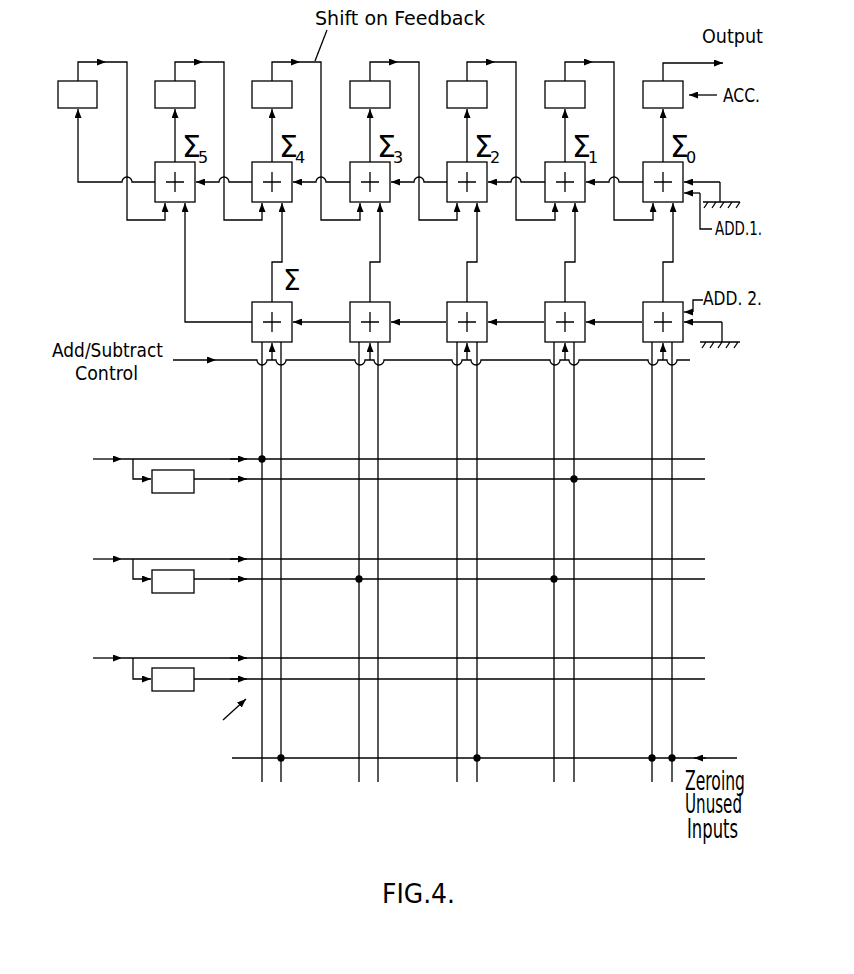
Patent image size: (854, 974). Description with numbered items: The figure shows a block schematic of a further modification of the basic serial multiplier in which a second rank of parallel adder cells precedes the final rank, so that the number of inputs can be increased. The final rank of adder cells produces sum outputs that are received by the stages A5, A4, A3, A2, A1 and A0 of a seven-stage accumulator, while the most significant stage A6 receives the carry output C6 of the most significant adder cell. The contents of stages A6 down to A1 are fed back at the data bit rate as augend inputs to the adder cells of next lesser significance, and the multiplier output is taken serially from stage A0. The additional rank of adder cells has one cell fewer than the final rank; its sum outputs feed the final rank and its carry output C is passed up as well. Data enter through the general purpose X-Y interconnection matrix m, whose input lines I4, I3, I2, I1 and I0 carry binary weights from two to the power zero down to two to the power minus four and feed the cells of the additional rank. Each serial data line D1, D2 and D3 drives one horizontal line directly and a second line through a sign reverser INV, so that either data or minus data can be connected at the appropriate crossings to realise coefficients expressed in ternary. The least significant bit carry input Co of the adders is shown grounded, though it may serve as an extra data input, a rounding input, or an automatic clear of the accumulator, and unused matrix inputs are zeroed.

The most significant accumulator stage A6 is at (77, 94).
The accumulator stage A5 is at (175, 94).
The accumulator stage A4 is at (272, 94).
The accumulator stage A3 is at (370, 94).
The accumulator stage A2 is at (467, 94).
The accumulator stage A1 is at (565, 94).
The least significant accumulator stage A0 is at (663, 94).
The input line I4 is at (259, 562).
The input line I3 is at (357, 562).
The input line I2 is at (456, 562).
The input line I1 is at (553, 562).
The input line I0 is at (651, 562).
The serial data word D1 is at (399, 443).
The serial data word D2 is at (399, 543).
The serial data word D3 is at (399, 643).
The sign reverser (inverter) INV is at (419, 575).
The carry output C is at (218, 273).
The carry output of most significant adder cell C6 is at (115, 162).
The least significant bit carry input Co is at (715, 187).
The input matrix m is at (222, 723).